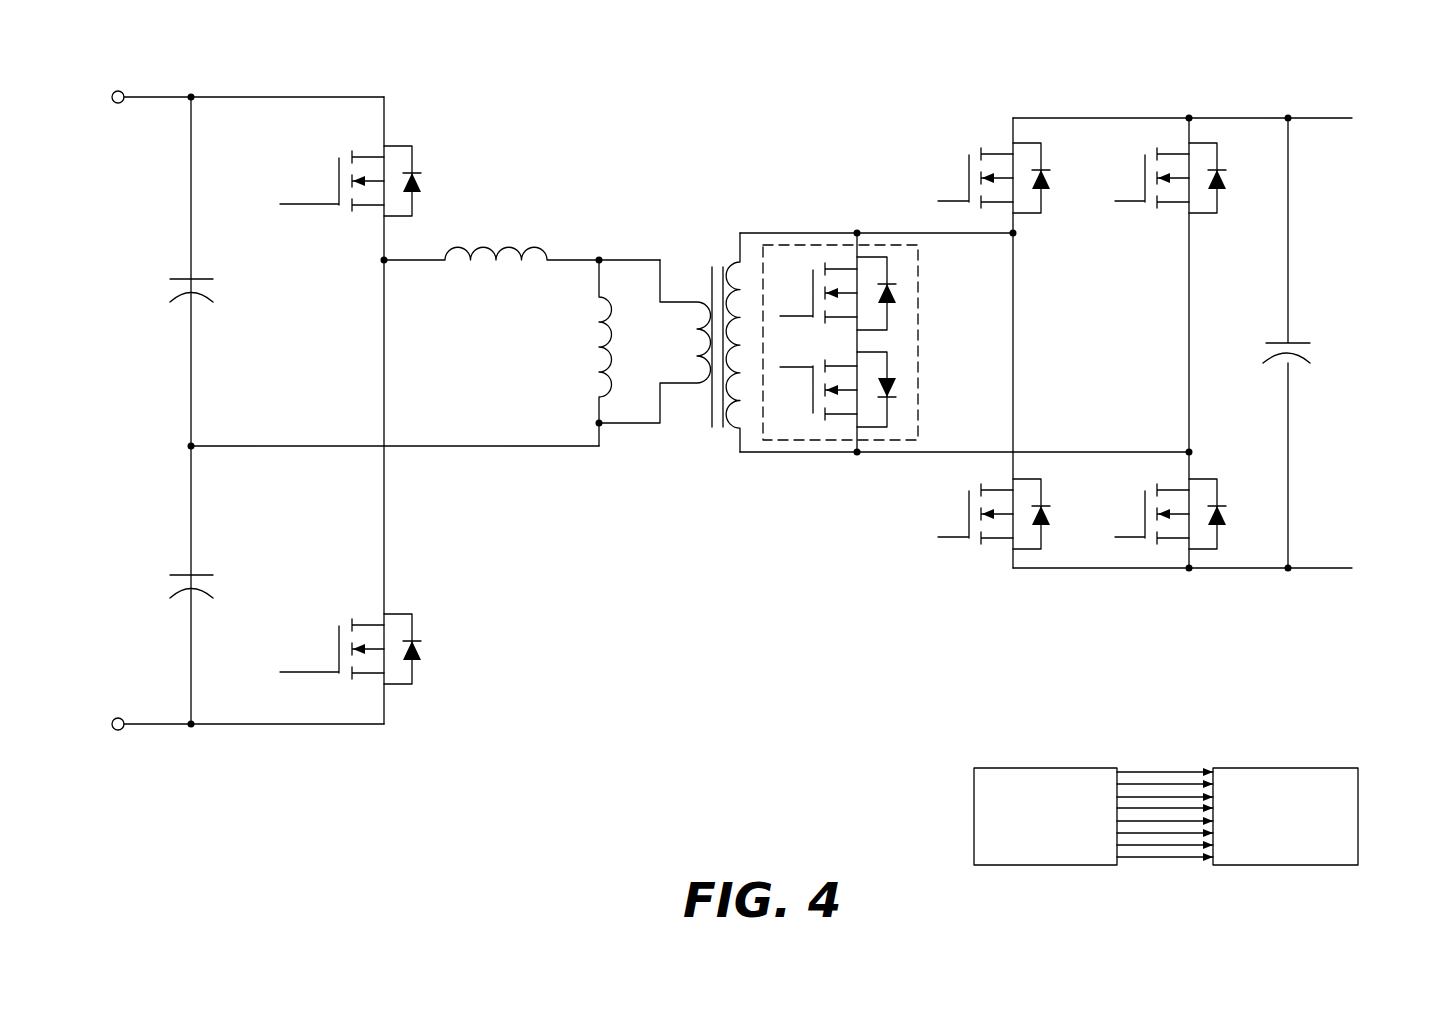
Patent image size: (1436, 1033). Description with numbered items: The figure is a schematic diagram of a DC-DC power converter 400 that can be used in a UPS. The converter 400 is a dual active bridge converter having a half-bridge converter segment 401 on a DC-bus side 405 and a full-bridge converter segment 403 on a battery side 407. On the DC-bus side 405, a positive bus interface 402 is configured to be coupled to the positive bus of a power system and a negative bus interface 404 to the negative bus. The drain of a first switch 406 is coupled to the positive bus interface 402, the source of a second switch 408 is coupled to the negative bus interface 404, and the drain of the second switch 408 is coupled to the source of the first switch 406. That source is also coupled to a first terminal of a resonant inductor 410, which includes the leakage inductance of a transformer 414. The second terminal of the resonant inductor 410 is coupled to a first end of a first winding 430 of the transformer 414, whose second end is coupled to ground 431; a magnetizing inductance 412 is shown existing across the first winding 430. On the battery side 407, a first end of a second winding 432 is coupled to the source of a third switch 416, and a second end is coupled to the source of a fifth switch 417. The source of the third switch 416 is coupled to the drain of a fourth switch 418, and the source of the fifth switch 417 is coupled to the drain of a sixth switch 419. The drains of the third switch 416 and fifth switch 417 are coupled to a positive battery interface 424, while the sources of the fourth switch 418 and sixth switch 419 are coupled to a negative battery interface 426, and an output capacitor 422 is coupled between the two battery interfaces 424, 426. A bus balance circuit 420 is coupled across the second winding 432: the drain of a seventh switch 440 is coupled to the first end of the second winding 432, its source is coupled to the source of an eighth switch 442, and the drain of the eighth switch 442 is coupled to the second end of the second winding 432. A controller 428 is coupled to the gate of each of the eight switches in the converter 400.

The DC-DC power converter 400 is at (1313, 103).
The half-bridge converter segment 401 is at (522, 158).
The positive bus interface 402 is at (288, 97).
The full-bridge converter segment 403 is at (860, 167).
The negative bus interface 404 is at (292, 724).
The DC-bus side 405 is at (513, 592).
The first switch 406 is at (328, 205).
The battery side 407 is at (828, 547).
The second switch 408 is at (315, 673).
The resonant inductor 410 is at (530, 252).
The magnetizing inductance 412 is at (608, 373).
The transformer 414 is at (710, 250).
The third switch 416 is at (960, 190).
The fifth switch 417 is at (1177, 150).
The fourth switch 418 is at (957, 537).
The sixth switch 419 is at (1172, 490).
The bus balance circuit 420 is at (921, 343).
The output capacitor 422 is at (1275, 343).
The positive battery interface 424 is at (1288, 118).
The negative battery interface 426 is at (1288, 568).
The controller 428 is at (1047, 768).
The first winding 430 is at (697, 385).
The ground 431 is at (191, 446).
The second winding 432 is at (730, 268).
The seventh switch 440 is at (830, 270).
The eighth switch 442 is at (829, 416).